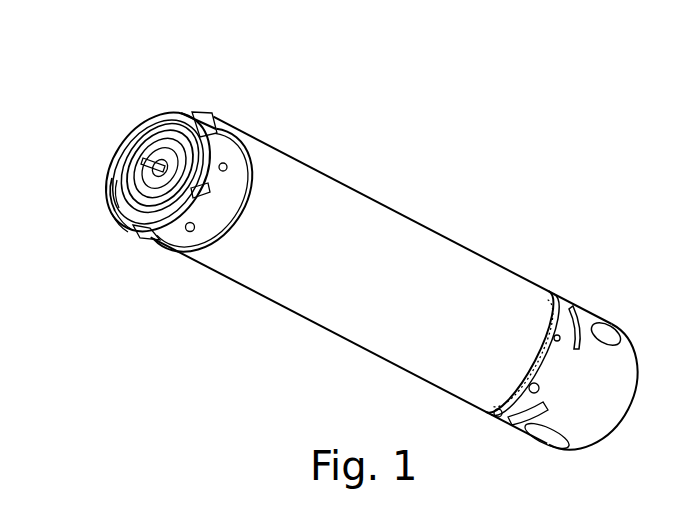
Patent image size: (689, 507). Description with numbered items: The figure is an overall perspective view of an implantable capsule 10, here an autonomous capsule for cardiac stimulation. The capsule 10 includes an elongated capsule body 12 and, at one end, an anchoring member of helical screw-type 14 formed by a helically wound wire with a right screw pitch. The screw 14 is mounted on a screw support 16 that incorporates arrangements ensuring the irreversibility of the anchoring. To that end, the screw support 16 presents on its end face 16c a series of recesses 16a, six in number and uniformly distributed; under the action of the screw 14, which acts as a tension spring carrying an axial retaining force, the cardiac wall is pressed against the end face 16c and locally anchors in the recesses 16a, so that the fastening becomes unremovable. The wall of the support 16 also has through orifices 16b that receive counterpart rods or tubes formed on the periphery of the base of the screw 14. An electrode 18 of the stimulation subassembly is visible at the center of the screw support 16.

The implantable capsule 10 is at (478, 222).
The capsule body 12 is at (313, 308).
The anchoring member of helical screw-type 14 is at (129, 121).
The screw support 16 is at (155, 240).
The recesses 16a is at (137, 226).
The through orifices 16b is at (224, 166).
The end face 16c is at (122, 226).
The electrode 18 is at (160, 163).